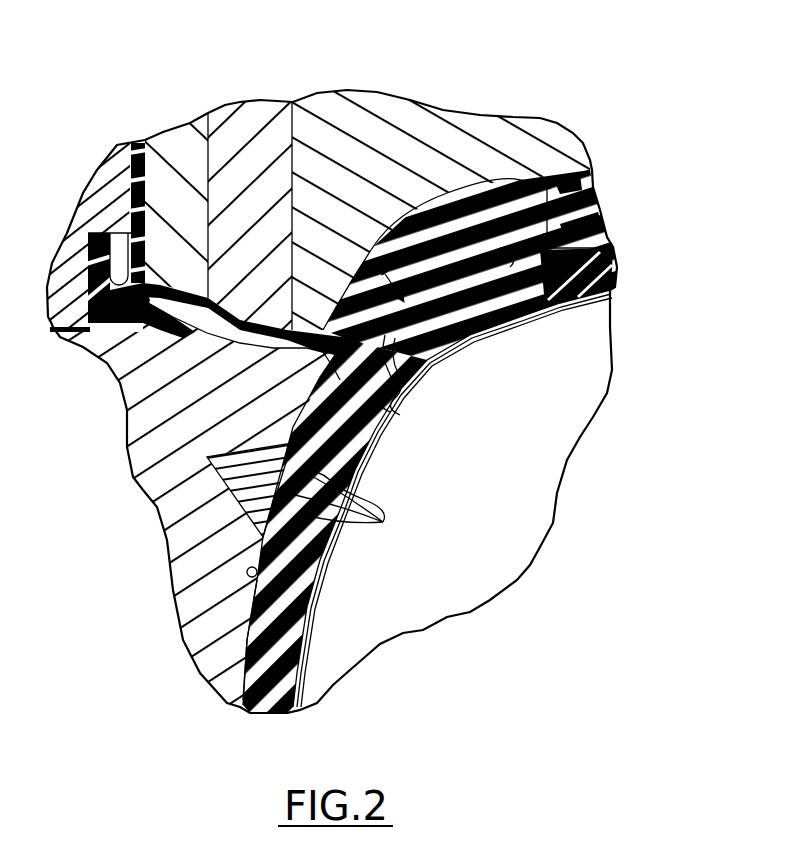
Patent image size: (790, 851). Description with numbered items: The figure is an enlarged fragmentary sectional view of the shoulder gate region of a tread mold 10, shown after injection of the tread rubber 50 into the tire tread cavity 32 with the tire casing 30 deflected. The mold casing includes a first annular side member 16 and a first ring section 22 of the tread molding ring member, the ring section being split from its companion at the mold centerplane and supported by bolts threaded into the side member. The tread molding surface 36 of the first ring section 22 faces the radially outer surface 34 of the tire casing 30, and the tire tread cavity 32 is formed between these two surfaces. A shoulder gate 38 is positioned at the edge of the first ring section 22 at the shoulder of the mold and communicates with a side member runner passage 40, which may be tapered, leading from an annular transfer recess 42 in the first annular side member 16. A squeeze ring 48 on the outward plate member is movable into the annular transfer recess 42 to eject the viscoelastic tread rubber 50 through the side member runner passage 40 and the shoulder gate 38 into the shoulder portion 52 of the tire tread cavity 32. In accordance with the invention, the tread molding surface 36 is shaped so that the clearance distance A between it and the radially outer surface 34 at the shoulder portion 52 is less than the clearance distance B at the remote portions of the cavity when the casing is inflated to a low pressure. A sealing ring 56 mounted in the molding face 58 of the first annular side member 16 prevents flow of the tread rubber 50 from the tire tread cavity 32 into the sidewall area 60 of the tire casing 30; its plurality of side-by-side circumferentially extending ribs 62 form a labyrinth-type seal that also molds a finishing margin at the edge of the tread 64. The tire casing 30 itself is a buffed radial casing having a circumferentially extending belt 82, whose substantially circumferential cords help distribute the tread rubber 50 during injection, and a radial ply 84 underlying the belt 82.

The tread mold 10 is at (528, 52).
The first annular side member 16 is at (185, 545).
The first ring section 22 is at (540, 127).
The tire casing 30 is at (478, 325).
The tire tread cavity 32 is at (572, 197).
The radially outer surface 34 is at (597, 240).
The tread molding surface 36 is at (593, 168).
The shoulder gate 38 is at (393, 330).
The side member runner passage 40 is at (223, 323).
The annular transfer recess 42 is at (107, 327).
The squeeze ring 48 is at (68, 265).
The tread rubber 50 is at (138, 150).
The shoulder portion 52 is at (360, 347).
The sealing ring 56 is at (207, 457).
The molding face 58 is at (247, 660).
The sidewall area 60 is at (258, 572).
The circumferentially extending rib 62 is at (380, 522).
The tread 64 is at (460, 222).
The belt 82 is at (607, 289).
The radial ply 84 is at (293, 680).
The clearance distance A is at (407, 307).
The clearance distance B is at (585, 195).